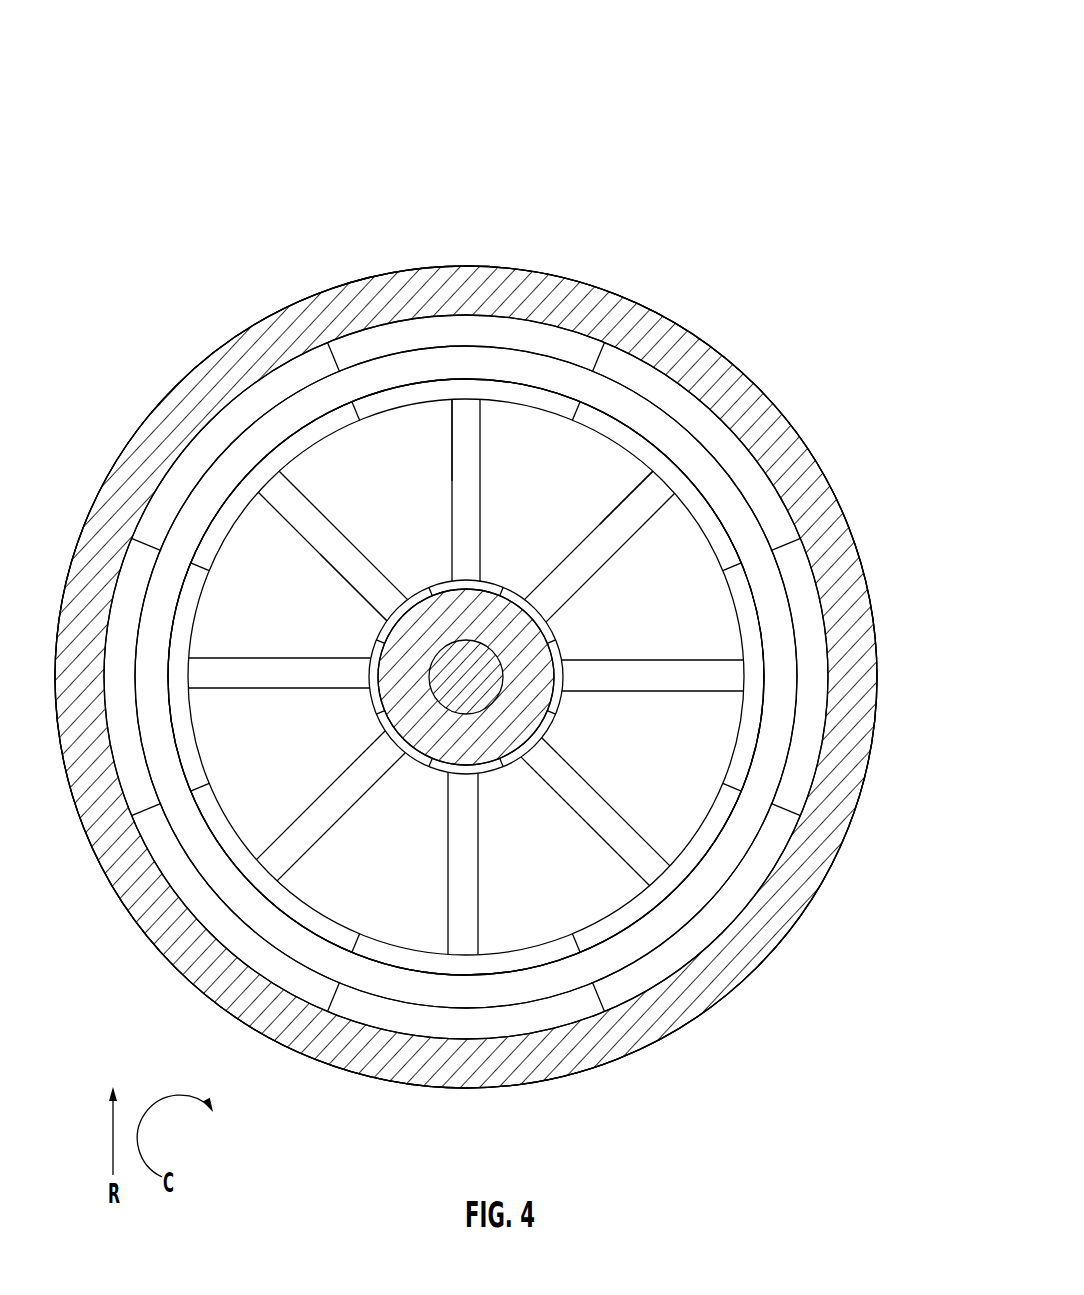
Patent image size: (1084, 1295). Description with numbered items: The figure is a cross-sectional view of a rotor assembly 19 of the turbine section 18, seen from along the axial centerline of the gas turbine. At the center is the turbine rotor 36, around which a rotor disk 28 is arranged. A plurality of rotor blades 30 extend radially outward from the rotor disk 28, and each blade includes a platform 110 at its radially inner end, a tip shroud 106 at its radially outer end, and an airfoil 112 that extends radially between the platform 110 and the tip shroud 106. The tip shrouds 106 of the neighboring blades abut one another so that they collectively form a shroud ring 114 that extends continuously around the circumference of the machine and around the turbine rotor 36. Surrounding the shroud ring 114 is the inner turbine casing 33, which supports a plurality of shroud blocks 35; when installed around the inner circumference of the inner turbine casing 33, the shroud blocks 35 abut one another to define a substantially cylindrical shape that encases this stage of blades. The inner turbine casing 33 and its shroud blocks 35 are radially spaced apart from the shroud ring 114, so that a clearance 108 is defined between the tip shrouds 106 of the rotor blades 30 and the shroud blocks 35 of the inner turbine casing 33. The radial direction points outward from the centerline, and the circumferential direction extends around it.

The rotor assembly 19 is at (115, 104).
The turbine section 18 is at (98, 262).
The inner turbine casing 33 is at (655, 322).
The shroud blocks 35 is at (237, 407).
The clearance 108 is at (477, 352).
The shroud ring 114 is at (786, 704).
The tip shroud 106 is at (328, 440).
The rotor blades 30 is at (466, 516).
The airfoil 112 is at (451, 492).
The platform 110 is at (377, 627).
The rotor disk 28 is at (497, 608).
The turbine rotor 36 is at (495, 675).